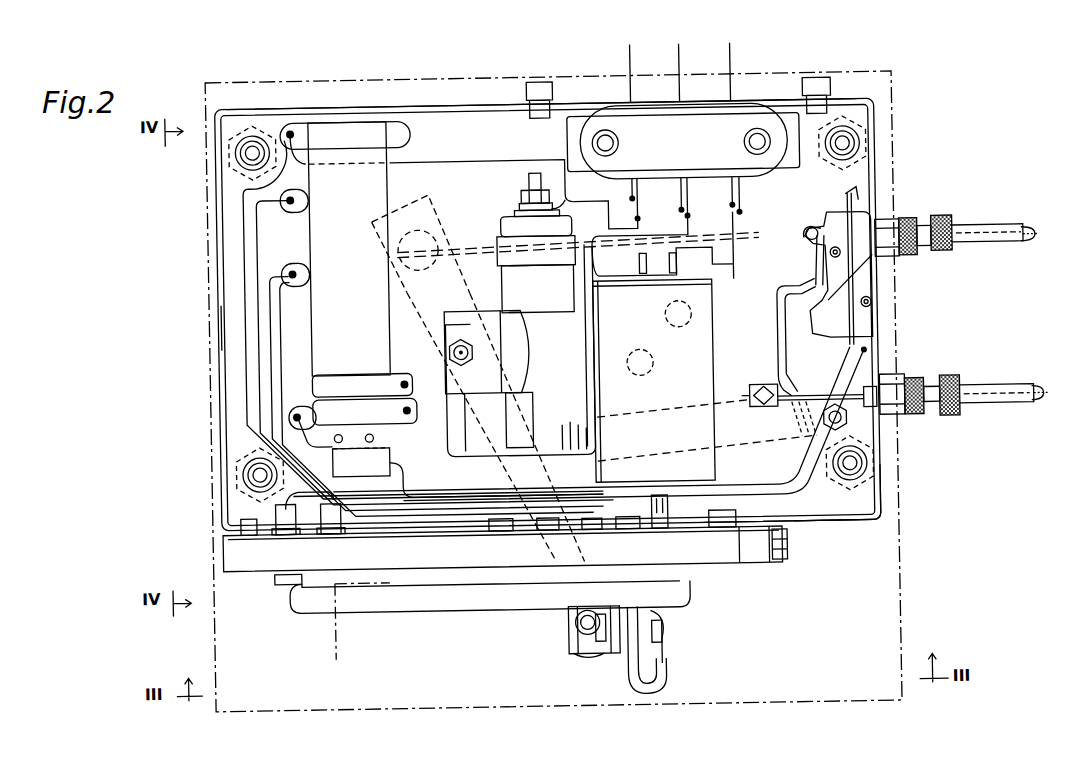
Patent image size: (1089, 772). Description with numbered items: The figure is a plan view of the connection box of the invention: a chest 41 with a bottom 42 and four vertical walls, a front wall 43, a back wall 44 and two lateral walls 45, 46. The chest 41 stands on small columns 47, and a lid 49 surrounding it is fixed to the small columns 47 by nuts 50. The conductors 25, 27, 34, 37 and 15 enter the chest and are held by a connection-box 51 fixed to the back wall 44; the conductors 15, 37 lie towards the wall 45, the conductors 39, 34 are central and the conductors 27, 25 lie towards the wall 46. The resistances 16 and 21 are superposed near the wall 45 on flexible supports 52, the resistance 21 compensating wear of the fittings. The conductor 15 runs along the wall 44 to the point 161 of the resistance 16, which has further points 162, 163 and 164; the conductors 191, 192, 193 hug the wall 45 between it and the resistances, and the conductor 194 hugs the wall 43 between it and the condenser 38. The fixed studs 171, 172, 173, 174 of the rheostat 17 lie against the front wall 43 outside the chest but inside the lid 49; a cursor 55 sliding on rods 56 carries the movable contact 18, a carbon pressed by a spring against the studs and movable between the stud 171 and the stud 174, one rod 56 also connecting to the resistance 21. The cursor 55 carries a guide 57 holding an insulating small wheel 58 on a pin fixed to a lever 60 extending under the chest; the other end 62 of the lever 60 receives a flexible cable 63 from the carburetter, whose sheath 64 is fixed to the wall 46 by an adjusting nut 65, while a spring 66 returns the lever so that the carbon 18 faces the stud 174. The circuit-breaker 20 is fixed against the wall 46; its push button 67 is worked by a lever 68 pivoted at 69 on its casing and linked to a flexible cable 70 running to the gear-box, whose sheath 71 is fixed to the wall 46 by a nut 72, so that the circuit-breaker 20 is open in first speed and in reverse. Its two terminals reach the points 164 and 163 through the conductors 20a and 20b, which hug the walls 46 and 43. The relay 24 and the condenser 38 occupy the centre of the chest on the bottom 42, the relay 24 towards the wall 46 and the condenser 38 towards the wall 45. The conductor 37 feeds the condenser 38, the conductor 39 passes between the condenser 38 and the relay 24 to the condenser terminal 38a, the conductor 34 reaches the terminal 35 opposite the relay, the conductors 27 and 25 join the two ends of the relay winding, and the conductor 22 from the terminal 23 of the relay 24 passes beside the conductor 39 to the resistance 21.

The conductor 15 is at (632, 60).
The resistance 16 is at (432, 205).
The point 161 is at (294, 128).
The contact tab 162 is at (292, 200).
The point 163 is at (298, 259).
The point 164 is at (296, 411).
The rheostat stud 17 is at (421, 582).
The stud 171 is at (497, 530).
The terminal 172 is at (545, 530).
The terminal 173 is at (590, 530).
The stud 174 is at (620, 530).
The movable contact 18 is at (652, 530).
The conductor 191 is at (244, 217).
The conductor 192 is at (260, 326).
The conductor 193 is at (270, 345).
The conductor 194 is at (460, 498).
The circuit-breaker 20 is at (870, 325).
The conductor 20a is at (750, 488).
The conductor 20b is at (765, 499).
The resistance 21 is at (380, 184).
The conductor 22 is at (365, 371).
The terminal 23 is at (678, 267).
The relay 24 is at (714, 296).
The conductor 25 is at (737, 60).
The conductor 27 is at (732, 60).
The conductor 34 is at (686, 88).
The terminal 35 is at (590, 266).
The conductor 37 is at (636, 60).
The condenser 38 is at (500, 226).
The terminal 38a is at (461, 338).
The conductor 39 is at (682, 88).
The chest 41 is at (210, 253).
The bottom 42 is at (230, 275).
The front wall 43 is at (828, 528).
The back wall 44 is at (458, 104).
The lateral wall 45 is at (222, 318).
The lateral wall 46 is at (880, 520).
The small column 47 is at (253, 166).
The lid 49 is at (905, 585).
The nut 50 is at (240, 160).
The connection-box 51 is at (720, 132).
The flexible support 52 is at (385, 462).
The cursor 55 is at (556, 651).
The rod 56 is at (470, 601).
The guide 57 is at (590, 656).
The insulating small wheel 58 is at (570, 624).
The lever 60 is at (515, 402).
The end of lever 62 is at (398, 264).
The flexible cable 63 is at (470, 254).
The sheath 64 is at (990, 232).
The nut 65 is at (943, 223).
The spring 66 is at (682, 410).
The push button 67 is at (814, 284).
The lever 68 is at (777, 337).
The pivot 69 is at (812, 233).
The flexible cable 70 is at (800, 400).
The sheath 71 is at (988, 392).
The nut 72 is at (948, 382).